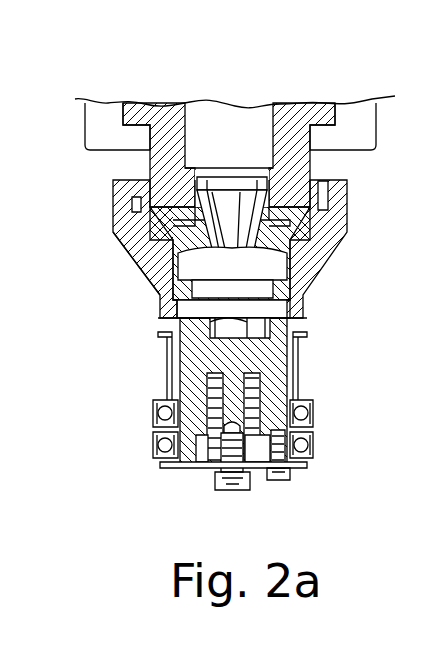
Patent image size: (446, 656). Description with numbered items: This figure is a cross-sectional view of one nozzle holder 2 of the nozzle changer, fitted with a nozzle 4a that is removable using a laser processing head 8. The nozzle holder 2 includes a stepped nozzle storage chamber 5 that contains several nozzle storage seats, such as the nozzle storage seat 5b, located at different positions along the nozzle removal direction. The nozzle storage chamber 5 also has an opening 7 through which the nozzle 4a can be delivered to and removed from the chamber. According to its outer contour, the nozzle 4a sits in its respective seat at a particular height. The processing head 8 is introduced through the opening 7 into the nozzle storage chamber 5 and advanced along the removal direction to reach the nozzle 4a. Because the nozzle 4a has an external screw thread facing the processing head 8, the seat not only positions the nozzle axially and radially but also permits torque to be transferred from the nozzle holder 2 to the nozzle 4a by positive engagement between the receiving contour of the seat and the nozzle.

The processing head 8 is at (289, 118).
The opening 7 is at (356, 226).
The nozzle holder 2 is at (333, 176).
The nozzle storage chamber 5 is at (142, 190).
The nozzle storage seat 5b is at (152, 258).
The nozzle 4a is at (273, 248).